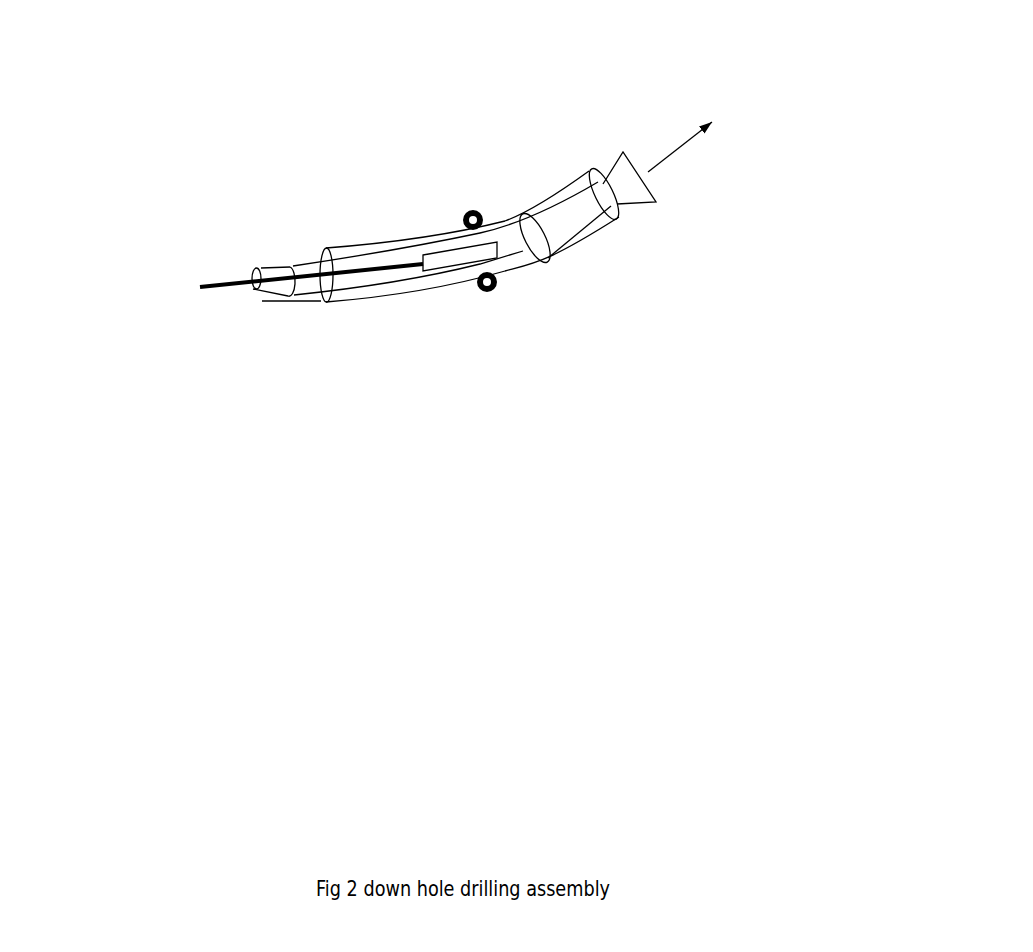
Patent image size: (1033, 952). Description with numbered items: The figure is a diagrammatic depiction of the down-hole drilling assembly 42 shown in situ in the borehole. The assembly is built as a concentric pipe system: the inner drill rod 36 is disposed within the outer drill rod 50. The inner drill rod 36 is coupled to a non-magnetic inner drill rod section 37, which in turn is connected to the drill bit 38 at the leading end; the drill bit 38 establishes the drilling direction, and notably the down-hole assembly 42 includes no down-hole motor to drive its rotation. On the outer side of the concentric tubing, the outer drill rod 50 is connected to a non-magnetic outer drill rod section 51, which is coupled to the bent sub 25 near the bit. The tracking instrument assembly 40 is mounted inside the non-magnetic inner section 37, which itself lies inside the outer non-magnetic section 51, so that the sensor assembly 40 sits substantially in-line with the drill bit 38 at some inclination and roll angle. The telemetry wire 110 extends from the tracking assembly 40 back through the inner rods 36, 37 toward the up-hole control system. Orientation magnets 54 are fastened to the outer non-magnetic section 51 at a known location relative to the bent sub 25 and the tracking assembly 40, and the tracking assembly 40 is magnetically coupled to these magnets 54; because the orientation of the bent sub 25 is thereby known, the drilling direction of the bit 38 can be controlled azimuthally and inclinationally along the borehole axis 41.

The bent sub 25 is at (553, 270).
The inner drill rod 36 is at (270, 303).
The non-magnetic inner drill rod section 37 is at (318, 304).
The drill bit 38 is at (623, 148).
The tracking instrument assembly 40 is at (437, 253).
The borehole axis 41 is at (756, 143).
The down-hole drilling assembly 42 is at (548, 527).
The outer drill rod 50 is at (352, 303).
The non-magnetic outer drill rod section 51 is at (388, 238).
The orientation magnets 54 is at (498, 302).
The telemetry wire 110 is at (233, 283).